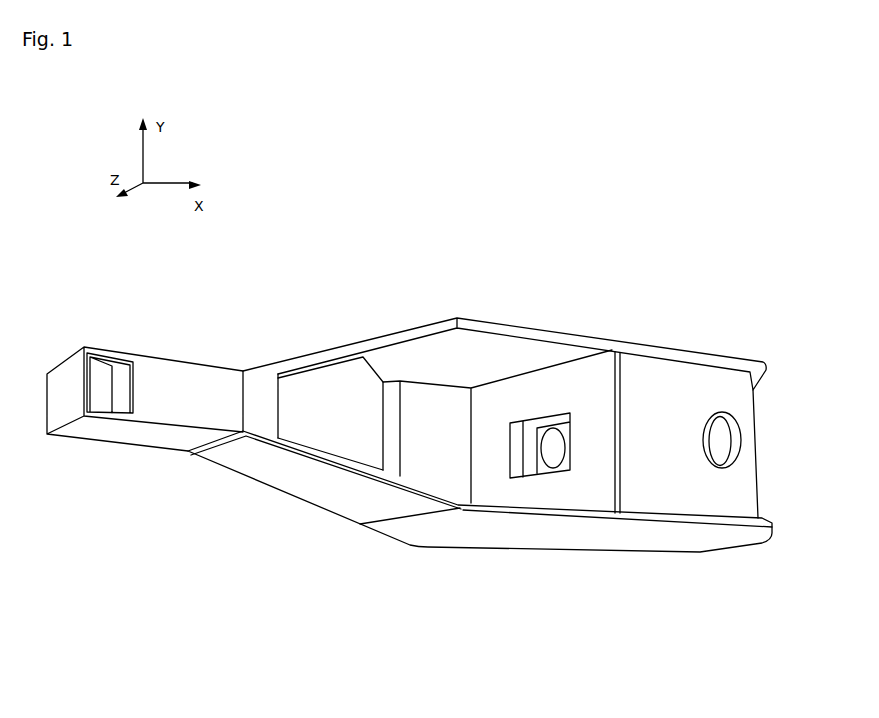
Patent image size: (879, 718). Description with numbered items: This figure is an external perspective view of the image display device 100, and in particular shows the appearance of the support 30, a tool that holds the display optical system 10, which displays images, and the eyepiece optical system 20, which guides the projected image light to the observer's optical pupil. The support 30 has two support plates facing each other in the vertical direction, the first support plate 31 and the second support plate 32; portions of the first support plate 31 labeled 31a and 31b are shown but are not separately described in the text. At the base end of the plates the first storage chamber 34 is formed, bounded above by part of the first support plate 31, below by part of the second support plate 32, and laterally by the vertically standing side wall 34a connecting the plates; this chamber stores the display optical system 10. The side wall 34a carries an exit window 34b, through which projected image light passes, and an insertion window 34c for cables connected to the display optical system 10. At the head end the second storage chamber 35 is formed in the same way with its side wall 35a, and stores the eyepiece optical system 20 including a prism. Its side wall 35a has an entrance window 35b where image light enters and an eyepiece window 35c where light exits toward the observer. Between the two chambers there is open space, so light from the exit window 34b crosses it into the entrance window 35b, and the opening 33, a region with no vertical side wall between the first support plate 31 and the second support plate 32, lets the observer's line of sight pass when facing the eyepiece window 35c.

The image display device 100 is at (603, 218).
The display optical system 10 is at (659, 336).
The eyepiece optical system 20 is at (107, 329).
The support 30 is at (275, 510).
The first support plate 31 is at (477, 314).
The inclined portion of top plate 31a is at (383, 337).
The inner inclined surface 31b is at (412, 478).
The second support plate 32 is at (549, 544).
The opening 33 is at (323, 420).
The first storage chamber 34 is at (723, 346).
The side wall 34a is at (710, 498).
The exit window 34b is at (570, 470).
The insertion window 34c is at (722, 443).
The second storage chamber 35 is at (179, 344).
The side wall 35a is at (152, 408).
The entrance window 35b is at (286, 406).
The eyepiece window 35c is at (100, 403).